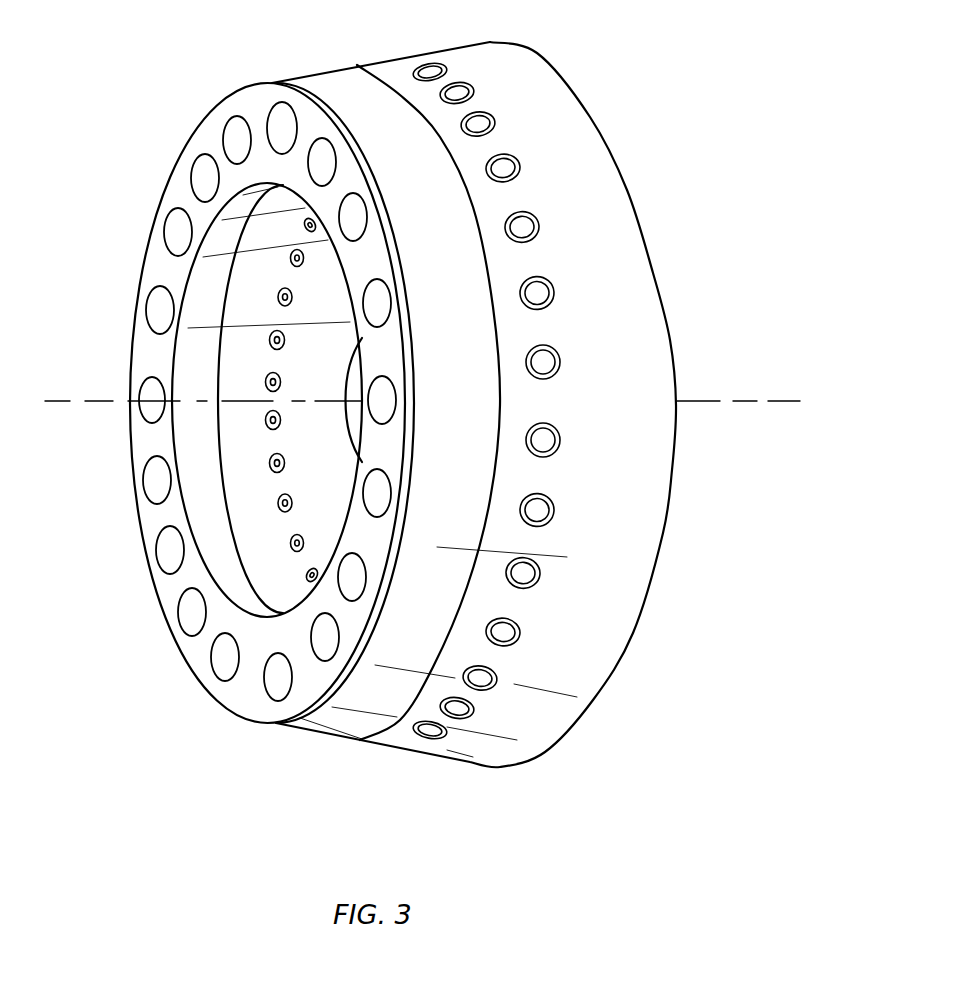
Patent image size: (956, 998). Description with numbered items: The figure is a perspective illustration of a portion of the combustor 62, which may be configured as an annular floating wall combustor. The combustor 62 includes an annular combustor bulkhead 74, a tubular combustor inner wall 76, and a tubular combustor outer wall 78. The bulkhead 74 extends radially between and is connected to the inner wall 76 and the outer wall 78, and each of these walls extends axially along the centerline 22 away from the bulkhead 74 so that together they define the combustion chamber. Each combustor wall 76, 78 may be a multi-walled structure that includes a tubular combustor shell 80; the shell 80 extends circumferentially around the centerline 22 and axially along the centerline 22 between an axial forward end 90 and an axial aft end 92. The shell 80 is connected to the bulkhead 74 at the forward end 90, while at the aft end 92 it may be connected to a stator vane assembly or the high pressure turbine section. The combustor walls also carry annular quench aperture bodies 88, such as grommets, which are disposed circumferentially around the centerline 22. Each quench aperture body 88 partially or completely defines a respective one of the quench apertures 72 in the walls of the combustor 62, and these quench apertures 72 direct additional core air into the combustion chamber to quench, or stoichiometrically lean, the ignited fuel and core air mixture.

The combustor 62 is at (690, 79).
The quench apertures 72 is at (309, 576).
The annular combustor bulkhead 74 is at (246, 696).
The tubular combustor inner wall 76 is at (222, 518).
The tubular combustor outer wall 78 is at (630, 298).
The tubular combustor shell 80 is at (627, 210).
The annular quench aperture bodies 88 is at (265, 420).
The axial forward end 90 is at (265, 722).
The axial aft end 92 is at (556, 740).
The centerline 22 is at (768, 401).